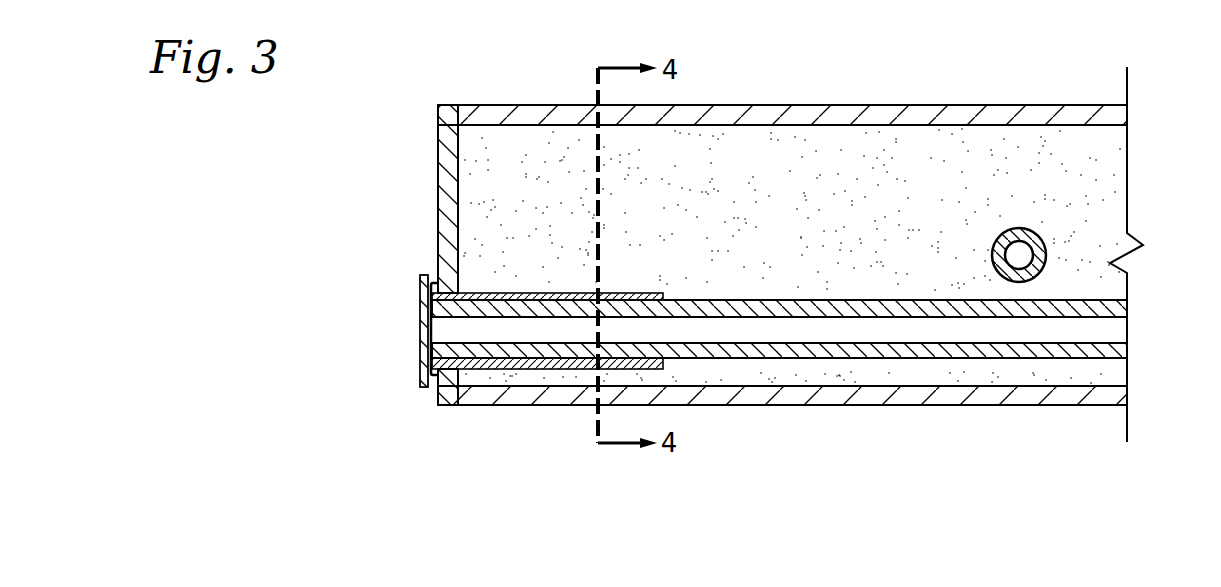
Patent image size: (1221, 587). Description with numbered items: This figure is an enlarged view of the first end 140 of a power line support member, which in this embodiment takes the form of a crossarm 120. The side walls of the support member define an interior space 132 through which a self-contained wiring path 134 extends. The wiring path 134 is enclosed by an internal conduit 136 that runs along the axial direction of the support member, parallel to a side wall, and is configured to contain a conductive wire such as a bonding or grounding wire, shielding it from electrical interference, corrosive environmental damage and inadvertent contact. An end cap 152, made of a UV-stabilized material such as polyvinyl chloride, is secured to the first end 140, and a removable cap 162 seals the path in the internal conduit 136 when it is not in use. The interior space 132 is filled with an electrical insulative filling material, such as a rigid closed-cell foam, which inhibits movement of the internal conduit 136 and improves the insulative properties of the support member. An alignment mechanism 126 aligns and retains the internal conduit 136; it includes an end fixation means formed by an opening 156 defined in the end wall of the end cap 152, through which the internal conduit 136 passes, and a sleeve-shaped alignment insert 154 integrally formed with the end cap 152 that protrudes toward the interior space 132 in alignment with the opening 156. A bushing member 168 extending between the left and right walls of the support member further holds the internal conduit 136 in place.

The crossarm 120 is at (773, 78).
The alignment mechanism 126 is at (488, 268).
The interior space 132 is at (858, 158).
The self-contained wiring path 134 is at (972, 337).
The internal conduit 136 is at (836, 348).
The first end 140 is at (438, 157).
The end cap 152 is at (437, 106).
The alignment insert 154 is at (568, 369).
The opening 156 is at (443, 311).
The cap 162 is at (420, 357).
The bushing member 168 is at (1040, 240).